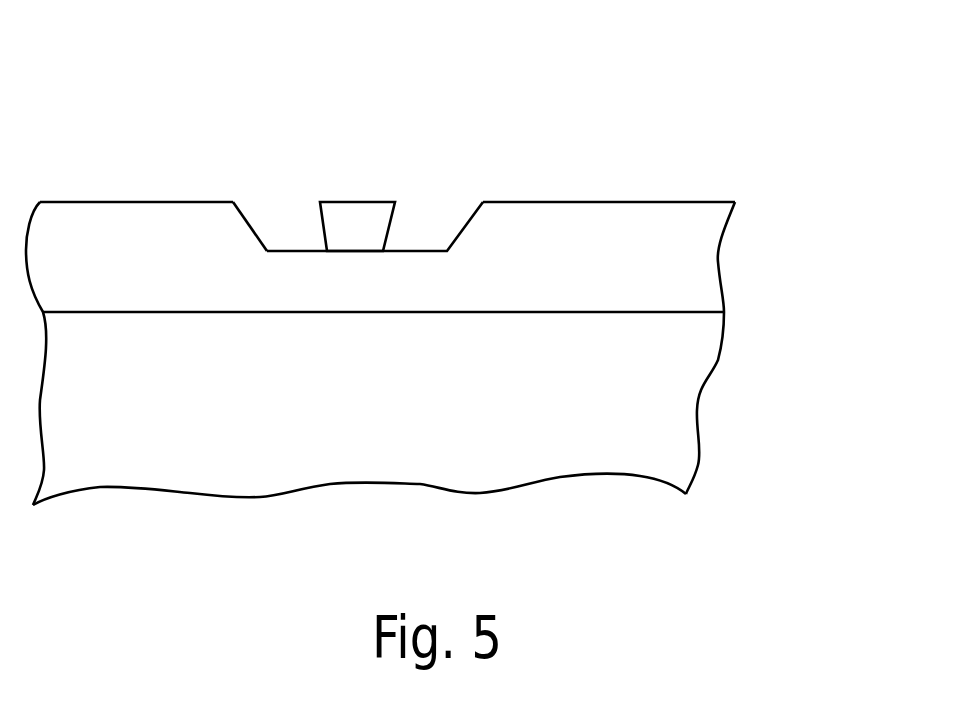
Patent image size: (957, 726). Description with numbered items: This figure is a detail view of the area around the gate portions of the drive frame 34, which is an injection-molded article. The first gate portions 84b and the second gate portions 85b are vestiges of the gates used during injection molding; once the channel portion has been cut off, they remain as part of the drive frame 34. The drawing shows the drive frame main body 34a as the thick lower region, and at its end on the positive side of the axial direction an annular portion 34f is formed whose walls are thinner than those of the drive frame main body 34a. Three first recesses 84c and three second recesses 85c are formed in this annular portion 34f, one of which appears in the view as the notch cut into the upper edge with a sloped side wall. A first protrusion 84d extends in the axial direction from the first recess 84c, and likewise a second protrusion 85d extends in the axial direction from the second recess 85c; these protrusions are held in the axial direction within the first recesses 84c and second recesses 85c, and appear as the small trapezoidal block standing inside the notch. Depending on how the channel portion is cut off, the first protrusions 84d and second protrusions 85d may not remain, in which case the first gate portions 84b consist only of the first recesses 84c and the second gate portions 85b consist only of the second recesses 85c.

The drive frame 34 is at (439, 271).
The drive frame main body 34a is at (651, 417).
The annular portion 34f is at (630, 223).
The first gate portion 84b is at (390, 145).
The second gate portion 85b is at (324, 178).
The first recess 84c is at (224, 178).
The second recess 85c is at (253, 223).
The first protrusion 84d is at (365, 144).
The second protrusion 85d is at (354, 213).